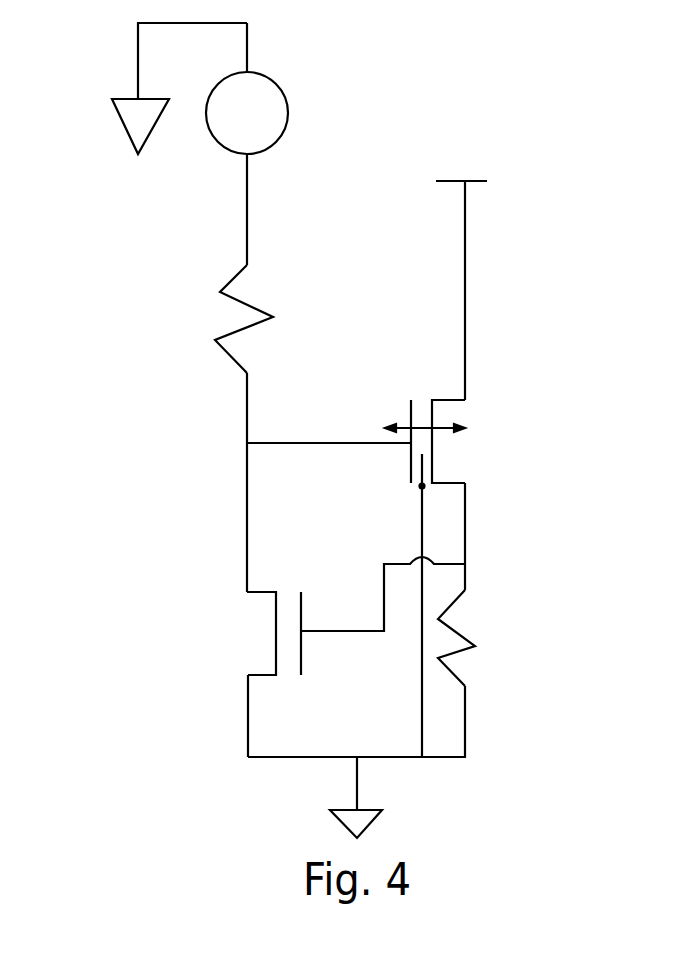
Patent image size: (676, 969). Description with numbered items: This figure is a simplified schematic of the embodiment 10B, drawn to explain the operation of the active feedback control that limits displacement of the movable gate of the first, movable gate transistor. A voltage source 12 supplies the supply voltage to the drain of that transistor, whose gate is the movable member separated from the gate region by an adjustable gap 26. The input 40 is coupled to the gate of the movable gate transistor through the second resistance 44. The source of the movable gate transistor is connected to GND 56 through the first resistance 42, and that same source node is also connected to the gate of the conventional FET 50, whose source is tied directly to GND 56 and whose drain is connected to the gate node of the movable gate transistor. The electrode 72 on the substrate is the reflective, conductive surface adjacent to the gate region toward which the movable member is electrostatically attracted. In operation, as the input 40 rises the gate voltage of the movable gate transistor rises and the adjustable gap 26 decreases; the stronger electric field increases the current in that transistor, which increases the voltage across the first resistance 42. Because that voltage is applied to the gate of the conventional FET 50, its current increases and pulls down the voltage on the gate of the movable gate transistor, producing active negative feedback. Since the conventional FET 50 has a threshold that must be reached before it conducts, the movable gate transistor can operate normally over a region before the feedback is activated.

The embodiment 10B is at (522, 400).
The voltage source 12 is at (487, 181).
The adjustable gap 26 is at (399, 424).
The input Vin 40 is at (285, 100).
The resistance R1 42 is at (463, 655).
The resistance R2 44 is at (238, 303).
The FET T2 50 is at (262, 590).
The GND 56 is at (117, 97).
The electrode 72 is at (420, 487).